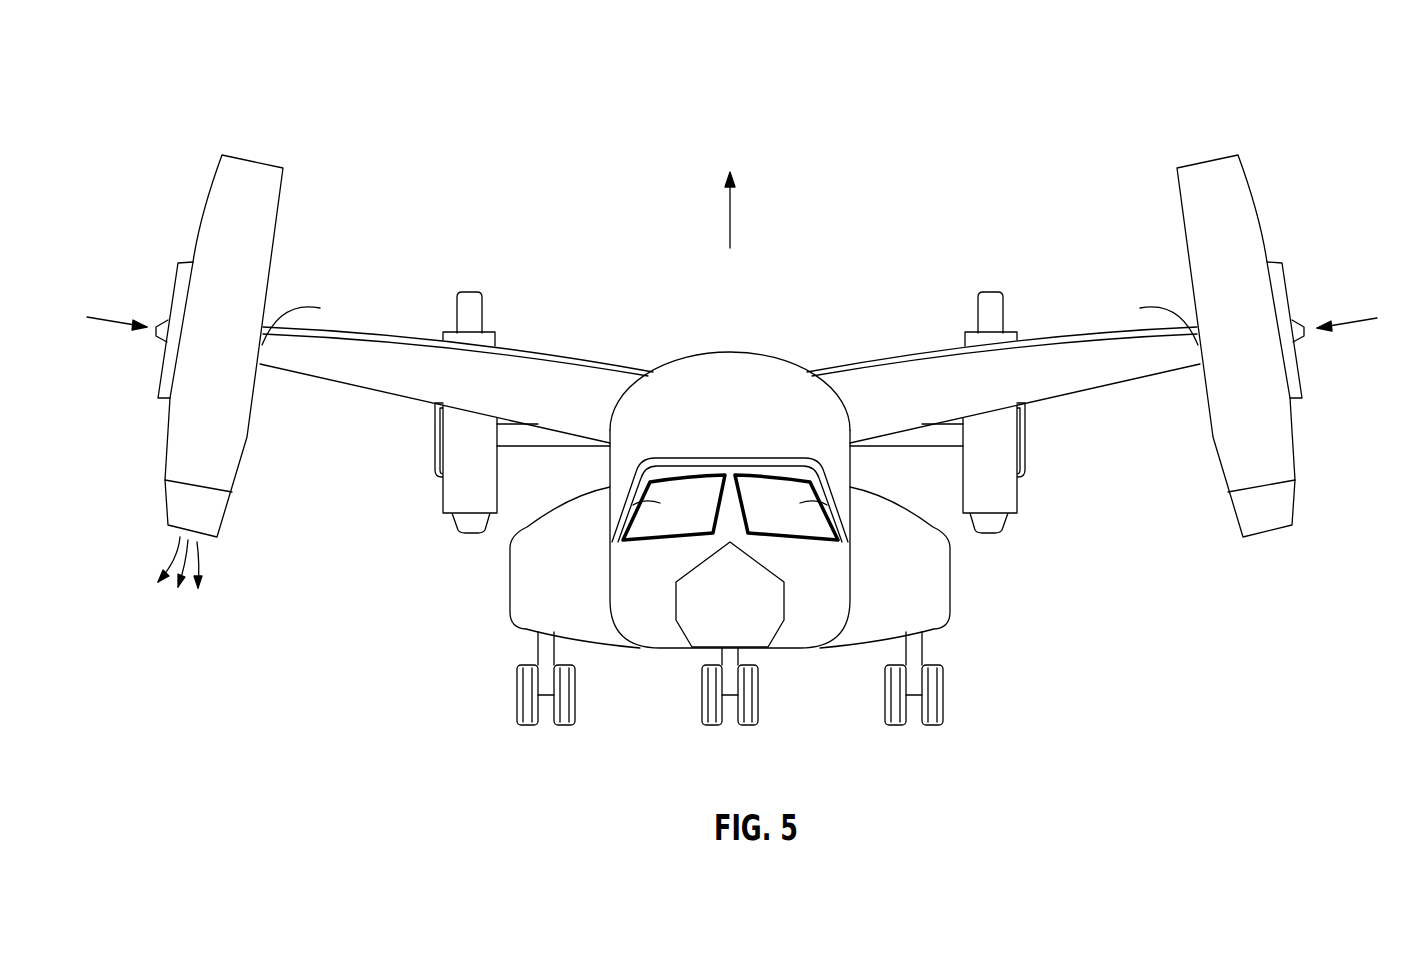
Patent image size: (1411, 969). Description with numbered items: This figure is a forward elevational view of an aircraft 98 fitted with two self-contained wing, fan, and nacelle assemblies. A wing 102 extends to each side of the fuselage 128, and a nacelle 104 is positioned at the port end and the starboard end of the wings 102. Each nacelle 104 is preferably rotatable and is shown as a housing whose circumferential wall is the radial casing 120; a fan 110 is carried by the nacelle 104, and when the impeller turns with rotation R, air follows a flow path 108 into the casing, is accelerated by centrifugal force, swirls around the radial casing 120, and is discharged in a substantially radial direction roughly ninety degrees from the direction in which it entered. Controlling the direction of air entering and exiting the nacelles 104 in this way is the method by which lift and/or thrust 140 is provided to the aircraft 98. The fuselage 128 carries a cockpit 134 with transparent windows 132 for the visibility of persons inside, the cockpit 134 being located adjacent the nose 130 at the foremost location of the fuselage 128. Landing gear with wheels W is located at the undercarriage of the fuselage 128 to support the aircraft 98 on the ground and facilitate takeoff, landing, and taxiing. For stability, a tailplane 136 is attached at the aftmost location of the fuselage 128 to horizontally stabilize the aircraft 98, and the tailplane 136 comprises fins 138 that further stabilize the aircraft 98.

The aircraft 98 is at (756, 338).
The wing 102 is at (527, 350).
The nacelle 104 is at (245, 215).
The flow path 108 is at (118, 328).
The fan 110 is at (1293, 300).
The radial casing 120 is at (247, 438).
The fuselage 128 is at (708, 420).
The nose 130 is at (720, 607).
The transparent windows 132 is at (622, 527).
The cockpit 134 is at (568, 603).
The tailplane 136 is at (543, 437).
The fins 138 is at (458, 442).
The lift and/or thrust 140 is at (730, 210).
The rotation R is at (730, 319).
The wheels W is at (517, 697).